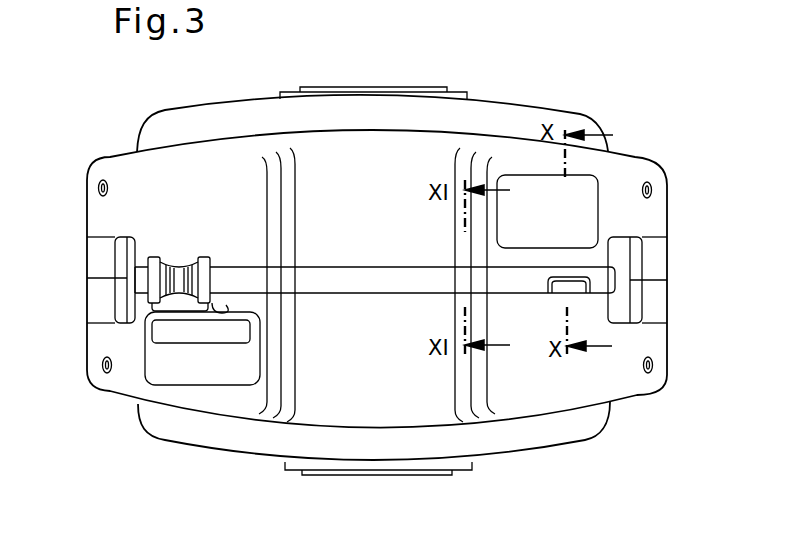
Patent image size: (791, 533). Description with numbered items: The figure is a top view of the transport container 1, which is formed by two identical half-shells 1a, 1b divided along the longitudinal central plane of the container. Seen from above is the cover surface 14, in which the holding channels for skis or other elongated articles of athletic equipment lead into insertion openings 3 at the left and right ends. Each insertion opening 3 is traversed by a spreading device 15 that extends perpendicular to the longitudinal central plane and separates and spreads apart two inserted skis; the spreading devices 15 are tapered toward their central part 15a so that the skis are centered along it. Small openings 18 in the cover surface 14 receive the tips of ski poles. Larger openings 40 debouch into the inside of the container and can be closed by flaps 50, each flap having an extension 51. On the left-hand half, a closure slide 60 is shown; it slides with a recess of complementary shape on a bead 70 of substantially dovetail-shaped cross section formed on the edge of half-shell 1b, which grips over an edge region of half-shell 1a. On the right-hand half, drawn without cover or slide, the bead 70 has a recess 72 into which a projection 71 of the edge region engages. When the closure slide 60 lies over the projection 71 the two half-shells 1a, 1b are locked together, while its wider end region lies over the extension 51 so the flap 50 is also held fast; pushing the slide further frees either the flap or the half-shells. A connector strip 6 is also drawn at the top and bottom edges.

The transport container 1 is at (373, 277).
The half-shell 1a is at (243, 440).
The half-shell 1b is at (335, 112).
The insertion opening 3 is at (130, 252).
The connector strip 6 is at (435, 92).
The cover surface 14 is at (209, 218).
The spreading device 15 is at (88, 311).
The central part 15a is at (98, 288).
The opening 18 is at (105, 178).
The opening 40 is at (500, 211).
The flap 50 is at (168, 373).
The extension 51 is at (217, 306).
The closure slide 60 is at (203, 257).
The bead 70 is at (360, 277).
The projection 71 is at (580, 290).
The recess 72 is at (545, 292).